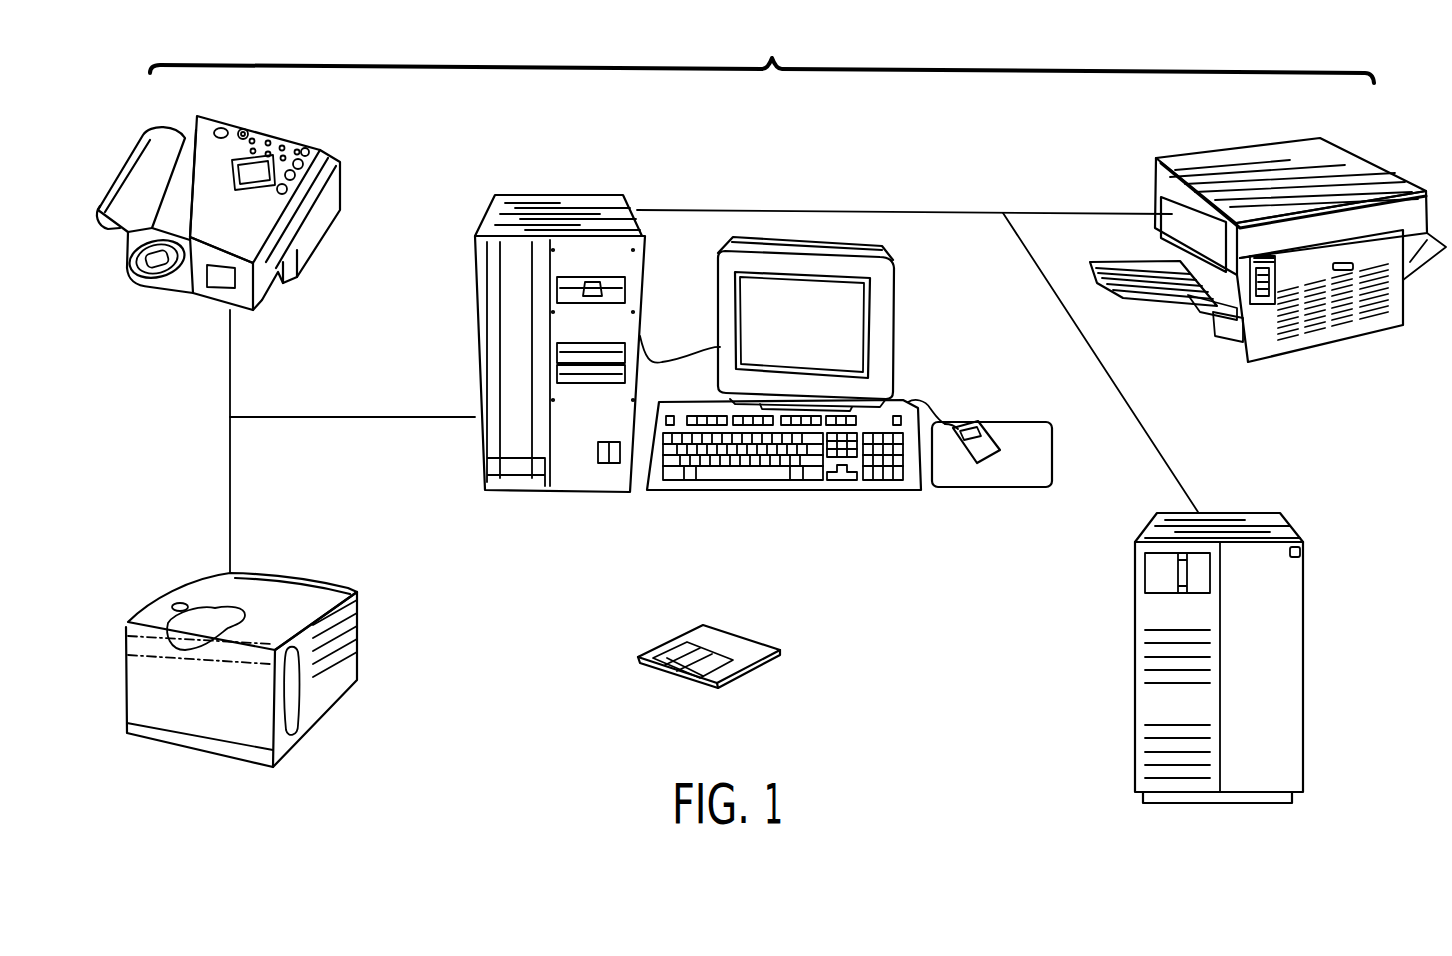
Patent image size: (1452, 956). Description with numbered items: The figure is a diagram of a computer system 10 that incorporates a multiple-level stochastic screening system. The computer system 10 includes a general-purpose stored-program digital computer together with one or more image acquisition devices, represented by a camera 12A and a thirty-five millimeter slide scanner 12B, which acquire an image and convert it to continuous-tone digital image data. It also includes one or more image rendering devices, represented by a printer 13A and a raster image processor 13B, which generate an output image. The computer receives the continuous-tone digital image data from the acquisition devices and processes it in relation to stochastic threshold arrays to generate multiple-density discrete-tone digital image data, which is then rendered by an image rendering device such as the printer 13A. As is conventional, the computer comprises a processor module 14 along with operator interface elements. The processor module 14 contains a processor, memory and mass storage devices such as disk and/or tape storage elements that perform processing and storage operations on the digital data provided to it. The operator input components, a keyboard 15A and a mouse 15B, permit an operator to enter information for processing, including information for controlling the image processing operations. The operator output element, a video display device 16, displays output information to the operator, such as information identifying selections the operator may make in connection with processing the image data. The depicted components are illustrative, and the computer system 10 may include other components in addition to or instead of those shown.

The computer system 10 is at (762, 54).
The camera 12A is at (318, 141).
The thirty-five millimeter slide scanner 12B is at (360, 615).
The printer 13A is at (1233, 148).
The raster image processor 13B is at (1303, 618).
The processor module 14 is at (556, 197).
The keyboard 15A is at (808, 489).
The mouse 15B is at (982, 452).
The video display device 16 is at (845, 243).